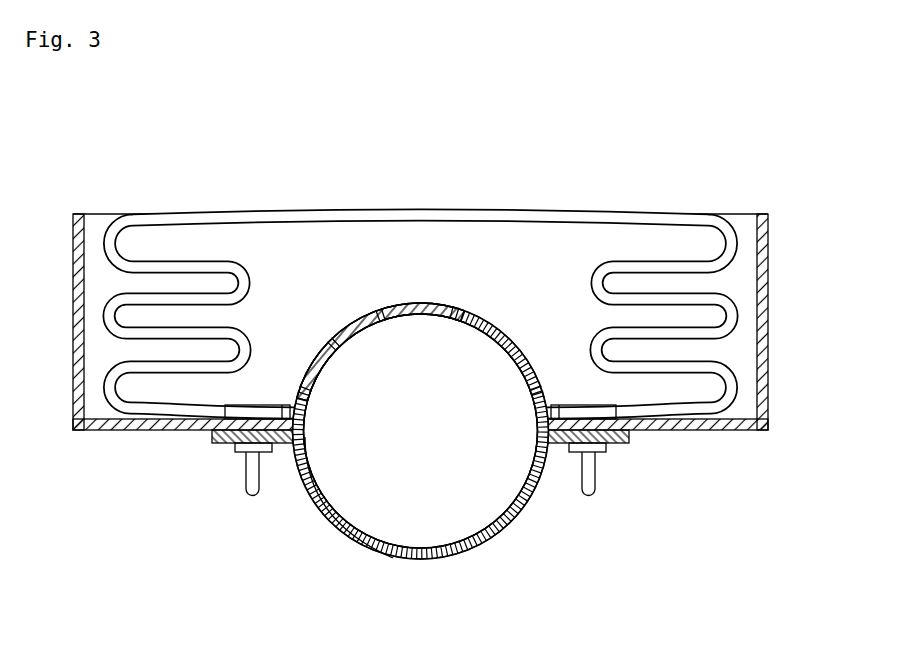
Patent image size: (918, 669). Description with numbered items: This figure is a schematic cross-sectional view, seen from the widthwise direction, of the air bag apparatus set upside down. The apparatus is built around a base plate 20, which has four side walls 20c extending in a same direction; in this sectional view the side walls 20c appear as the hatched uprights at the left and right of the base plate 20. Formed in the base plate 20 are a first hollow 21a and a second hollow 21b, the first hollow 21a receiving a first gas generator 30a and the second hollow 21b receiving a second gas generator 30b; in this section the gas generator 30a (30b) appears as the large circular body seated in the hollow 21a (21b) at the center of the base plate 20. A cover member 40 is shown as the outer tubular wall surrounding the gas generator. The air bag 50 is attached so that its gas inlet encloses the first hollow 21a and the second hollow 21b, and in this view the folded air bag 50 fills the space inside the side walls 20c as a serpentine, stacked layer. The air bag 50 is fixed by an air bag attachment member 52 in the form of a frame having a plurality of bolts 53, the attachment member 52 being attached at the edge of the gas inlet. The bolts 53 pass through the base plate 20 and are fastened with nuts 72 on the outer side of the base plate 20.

The base plate 20 is at (455, 365).
The side wall 20c is at (770, 315).
The first hollow 21a is at (412, 302).
The second hollow 21b is at (383, 322).
The first gas generator 30a is at (478, 431).
The second gas generator 30b is at (421, 431).
The cover member 40 is at (421, 437).
The air bag 50 is at (472, 206).
The air bag attachment member 52 is at (257, 404).
The bolt 53 is at (252, 497).
The nut 72 is at (232, 445).